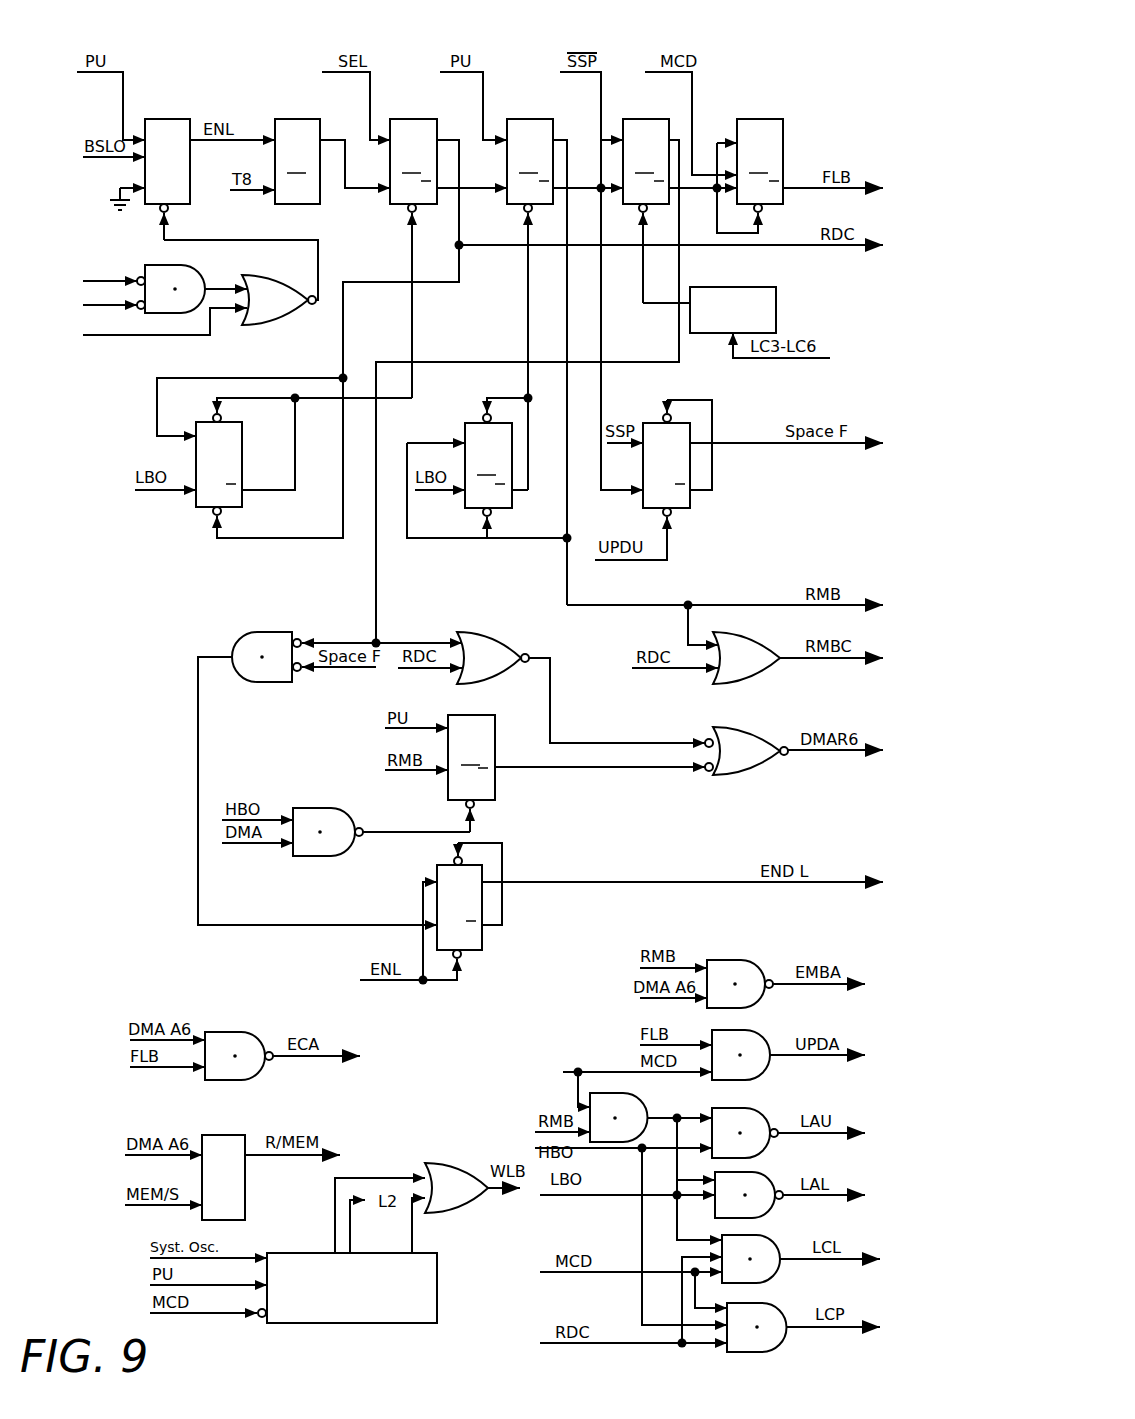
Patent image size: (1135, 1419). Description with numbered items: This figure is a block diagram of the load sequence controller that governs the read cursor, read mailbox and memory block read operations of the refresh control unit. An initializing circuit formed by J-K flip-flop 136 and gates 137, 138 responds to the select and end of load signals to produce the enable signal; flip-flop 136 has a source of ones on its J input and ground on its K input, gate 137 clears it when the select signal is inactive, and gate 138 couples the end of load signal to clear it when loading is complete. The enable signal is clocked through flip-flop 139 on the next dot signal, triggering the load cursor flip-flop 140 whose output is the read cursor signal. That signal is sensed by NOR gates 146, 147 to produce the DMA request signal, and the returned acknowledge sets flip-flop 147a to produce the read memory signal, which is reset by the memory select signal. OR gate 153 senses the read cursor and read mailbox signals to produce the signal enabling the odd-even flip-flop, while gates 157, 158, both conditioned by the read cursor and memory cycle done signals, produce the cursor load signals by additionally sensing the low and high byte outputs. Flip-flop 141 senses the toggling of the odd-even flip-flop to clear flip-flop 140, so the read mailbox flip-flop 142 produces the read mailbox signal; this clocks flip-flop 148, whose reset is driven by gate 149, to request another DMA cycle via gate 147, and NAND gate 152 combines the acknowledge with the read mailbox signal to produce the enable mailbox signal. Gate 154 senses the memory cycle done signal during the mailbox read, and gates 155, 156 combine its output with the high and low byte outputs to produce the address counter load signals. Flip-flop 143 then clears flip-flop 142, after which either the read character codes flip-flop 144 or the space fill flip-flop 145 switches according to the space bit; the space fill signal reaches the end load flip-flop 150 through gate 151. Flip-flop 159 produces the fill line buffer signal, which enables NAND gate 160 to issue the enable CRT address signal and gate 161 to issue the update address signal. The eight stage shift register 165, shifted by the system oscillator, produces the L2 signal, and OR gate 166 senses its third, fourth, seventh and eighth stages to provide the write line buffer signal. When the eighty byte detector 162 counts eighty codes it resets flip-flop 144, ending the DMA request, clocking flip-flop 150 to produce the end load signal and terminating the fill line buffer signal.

The J-K flip-flop 136 is at (160, 119).
The gate 137 is at (165, 265).
The gate 138 is at (262, 325).
The flip-flop 139 is at (290, 119).
The load cursor flip-flop 140 is at (406, 119).
The flip-flop 141 is at (193, 512).
The read mailbox flip-flop 142 is at (523, 119).
The flip-flop 143 is at (465, 420).
The read character codes flip-flop 144 is at (639, 119).
The space fill flip-flop 145 is at (678, 516).
The NOR gate 146 is at (490, 633).
The NOR gate 147 is at (735, 777).
The flip-flop 147a is at (222, 1134).
The flip-flop 148 is at (482, 715).
The gate 149 is at (345, 808).
The end load flip-flop 150 is at (466, 956).
The gate 151 is at (262, 631).
The NAND gate 152 is at (743, 960).
The OR gate 153 is at (755, 684).
The gate 154 is at (637, 1093).
The gate 155 is at (752, 1108).
The gate 156 is at (757, 1172).
The gate 157 is at (762, 1235).
The gate 158 is at (767, 1303).
The flip-flop 159 is at (753, 119).
The NAND gate 160 is at (237, 1032).
The gate 161 is at (752, 1030).
The 80 byte detector 162 is at (780, 306).
The shift register 165 is at (415, 1325).
The OR gate 166 is at (437, 1163).